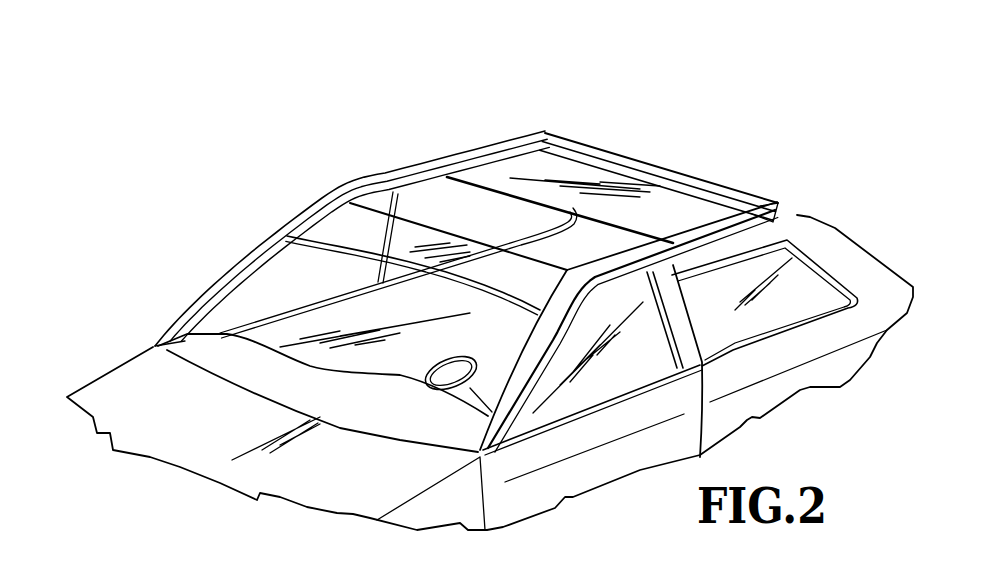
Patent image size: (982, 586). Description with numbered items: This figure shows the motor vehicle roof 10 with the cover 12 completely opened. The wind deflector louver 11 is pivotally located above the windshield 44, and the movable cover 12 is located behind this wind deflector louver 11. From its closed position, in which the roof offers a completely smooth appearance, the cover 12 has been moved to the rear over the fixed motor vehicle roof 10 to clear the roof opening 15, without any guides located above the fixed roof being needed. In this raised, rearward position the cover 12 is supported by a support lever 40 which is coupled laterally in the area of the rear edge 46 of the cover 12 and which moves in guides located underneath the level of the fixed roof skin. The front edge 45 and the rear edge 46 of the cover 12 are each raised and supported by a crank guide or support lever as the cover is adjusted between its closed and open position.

The motor vehicle roof 10 is at (645, 130).
The wind deflector louver 11 is at (338, 224).
The movable cover 12 is at (550, 160).
The roof opening 15 is at (447, 210).
The support lever 40 is at (778, 203).
The windshield 44 is at (275, 333).
The front edge 45 is at (645, 230).
The rear edge 46 is at (733, 187).